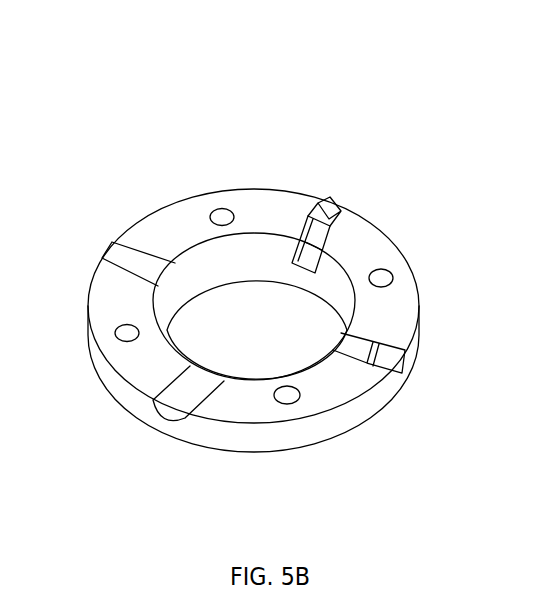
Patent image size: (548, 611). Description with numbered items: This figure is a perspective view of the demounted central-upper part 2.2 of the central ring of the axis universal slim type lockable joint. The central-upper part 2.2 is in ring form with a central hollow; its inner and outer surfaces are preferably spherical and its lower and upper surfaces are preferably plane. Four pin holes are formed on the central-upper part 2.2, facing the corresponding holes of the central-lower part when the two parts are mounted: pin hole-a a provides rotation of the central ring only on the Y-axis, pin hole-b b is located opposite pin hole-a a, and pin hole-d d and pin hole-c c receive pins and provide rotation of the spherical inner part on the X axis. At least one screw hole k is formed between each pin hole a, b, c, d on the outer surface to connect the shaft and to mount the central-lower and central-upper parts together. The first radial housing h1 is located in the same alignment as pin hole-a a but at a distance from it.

The central-upper part 2.2 is at (152, 110).
The pin hole- a is at (333, 205).
The pin hole- b is at (178, 403).
The pin hole- c is at (361, 349).
The pin hole- d is at (125, 257).
The screw hole k is at (393, 276).
The radial housing-1 h1 is at (307, 241).